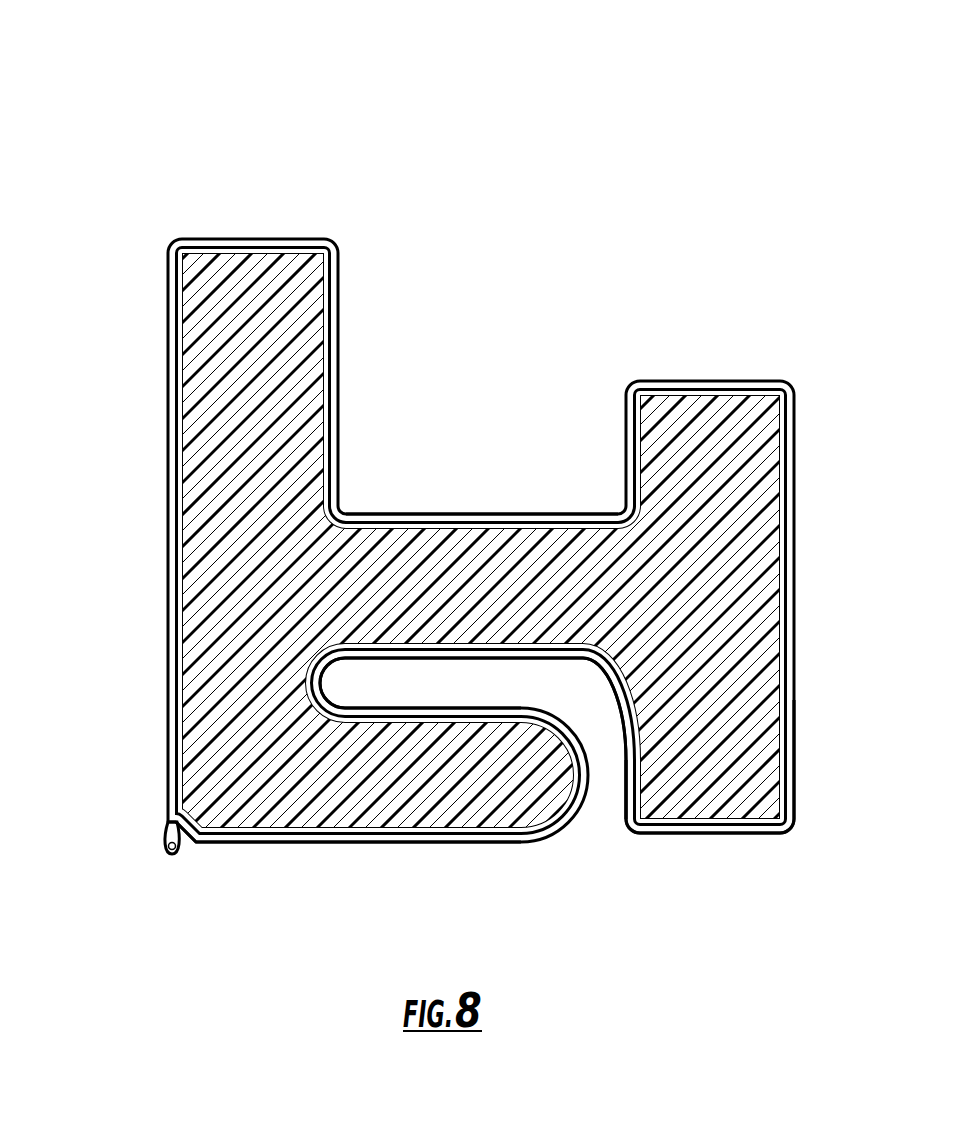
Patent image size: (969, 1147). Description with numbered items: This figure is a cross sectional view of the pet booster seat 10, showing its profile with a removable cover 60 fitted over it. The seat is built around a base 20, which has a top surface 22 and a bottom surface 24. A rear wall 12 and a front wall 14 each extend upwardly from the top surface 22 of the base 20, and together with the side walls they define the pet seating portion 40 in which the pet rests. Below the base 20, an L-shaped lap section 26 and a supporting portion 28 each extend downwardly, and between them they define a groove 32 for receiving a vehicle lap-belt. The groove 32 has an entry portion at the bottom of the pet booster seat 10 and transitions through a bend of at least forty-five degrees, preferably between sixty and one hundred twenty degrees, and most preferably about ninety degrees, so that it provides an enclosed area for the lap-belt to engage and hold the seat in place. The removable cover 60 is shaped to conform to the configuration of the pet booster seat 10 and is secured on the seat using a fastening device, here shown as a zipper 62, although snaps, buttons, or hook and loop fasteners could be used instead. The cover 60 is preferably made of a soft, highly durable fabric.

The pet booster seat 10 is at (484, 573).
The rear wall 12 is at (193, 620).
The front wall 14 is at (743, 578).
The base 20 is at (530, 553).
The top surface 22 is at (485, 510).
The bottom surface 24 is at (548, 653).
The L-shaped lap section 26 is at (390, 803).
The supporting portion 28 is at (762, 747).
The groove 32 is at (442, 670).
The pet seating portion 40 is at (653, 297).
The removable cover 60 is at (220, 845).
The zipper 62 is at (157, 842).